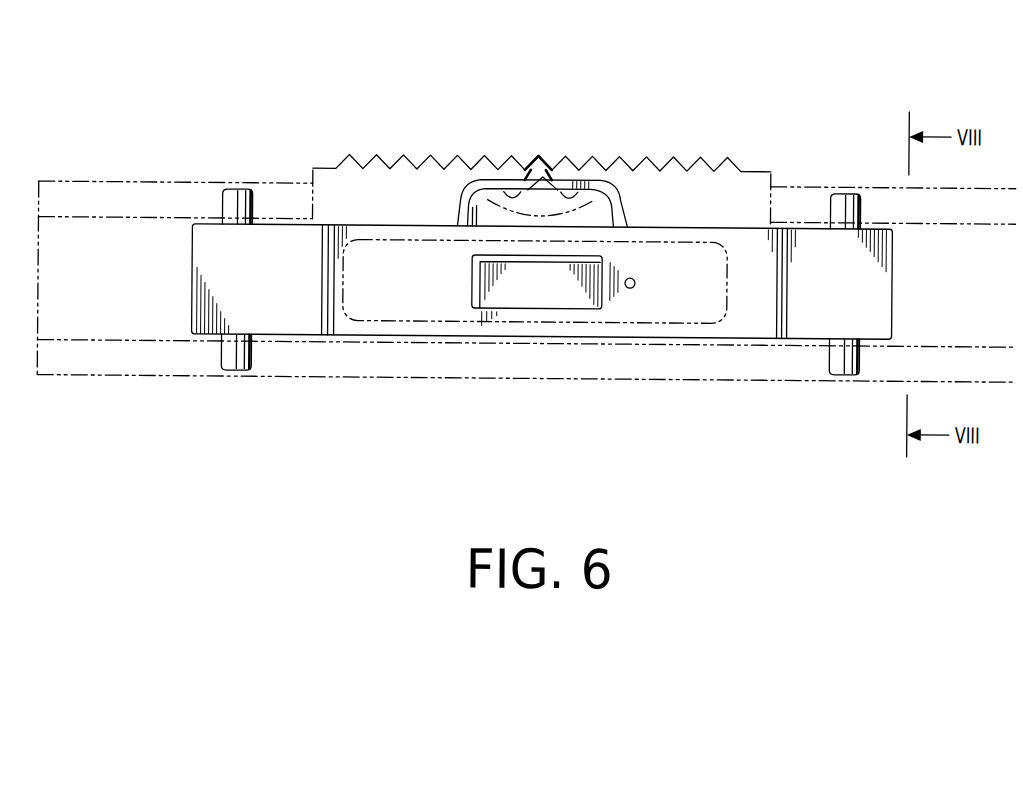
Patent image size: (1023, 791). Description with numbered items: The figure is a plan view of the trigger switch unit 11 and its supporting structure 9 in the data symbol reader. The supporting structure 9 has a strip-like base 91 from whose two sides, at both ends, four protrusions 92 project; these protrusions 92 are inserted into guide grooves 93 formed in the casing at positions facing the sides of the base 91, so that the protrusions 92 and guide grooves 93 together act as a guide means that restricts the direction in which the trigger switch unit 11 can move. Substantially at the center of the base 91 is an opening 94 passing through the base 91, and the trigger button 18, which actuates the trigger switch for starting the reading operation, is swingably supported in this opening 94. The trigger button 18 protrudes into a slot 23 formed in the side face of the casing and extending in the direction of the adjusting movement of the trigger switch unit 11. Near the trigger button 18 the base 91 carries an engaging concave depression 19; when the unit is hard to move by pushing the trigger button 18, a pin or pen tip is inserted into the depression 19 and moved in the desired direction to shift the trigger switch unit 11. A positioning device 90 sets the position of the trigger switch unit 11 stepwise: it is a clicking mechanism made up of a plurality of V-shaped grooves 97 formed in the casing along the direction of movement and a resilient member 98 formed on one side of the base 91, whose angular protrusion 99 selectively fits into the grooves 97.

The supporting structure 9 is at (771, 460).
The trigger switch unit 11 is at (630, 456).
The trigger button 18 is at (563, 299).
The engaging concave depression 19 is at (635, 287).
The slot 23 is at (727, 300).
The positioning device 90 is at (592, 108).
The base 91 is at (293, 308).
The protrusions 92 is at (233, 192).
The guide grooves 93 is at (107, 183).
The opening 94 is at (475, 311).
The V-shaped grooves 97 is at (387, 162).
The resilient member 98 is at (490, 180).
The angular protrusion 99 is at (538, 176).